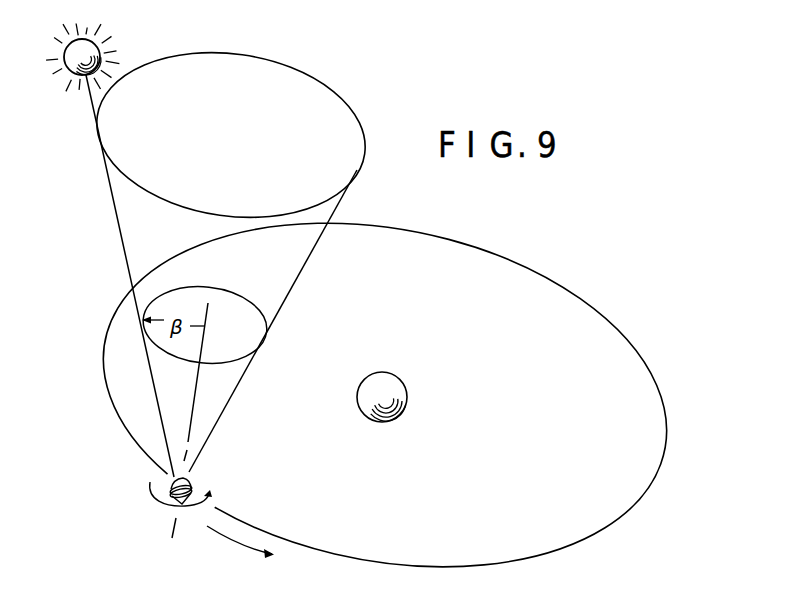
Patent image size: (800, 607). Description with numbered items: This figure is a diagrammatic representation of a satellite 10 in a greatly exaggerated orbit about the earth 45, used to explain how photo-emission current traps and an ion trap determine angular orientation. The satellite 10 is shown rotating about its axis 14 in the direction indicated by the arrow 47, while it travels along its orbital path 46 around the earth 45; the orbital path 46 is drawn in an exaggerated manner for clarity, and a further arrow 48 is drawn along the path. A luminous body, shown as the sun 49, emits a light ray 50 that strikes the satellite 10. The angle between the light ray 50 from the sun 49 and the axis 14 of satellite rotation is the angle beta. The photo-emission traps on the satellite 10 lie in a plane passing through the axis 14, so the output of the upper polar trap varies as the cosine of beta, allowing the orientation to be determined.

The satellite 10 is at (194, 483).
The axis 14 is at (204, 344).
The earth 45 is at (398, 385).
The orbital path 46 is at (462, 567).
The arrow 47 is at (168, 507).
The orbital motion direction arrow 48 is at (236, 541).
The sun 49 is at (63, 52).
The light ray 50 is at (117, 222).